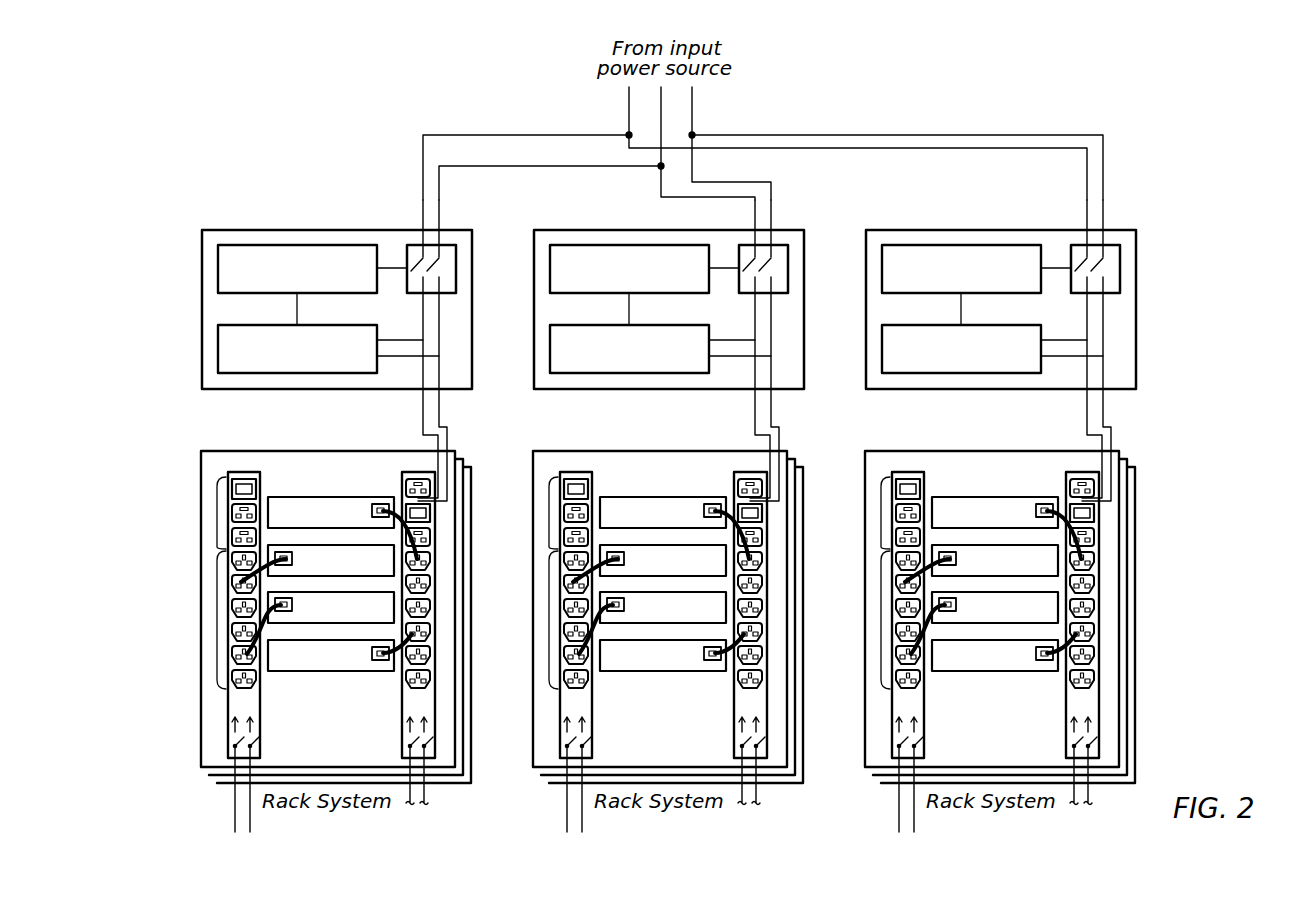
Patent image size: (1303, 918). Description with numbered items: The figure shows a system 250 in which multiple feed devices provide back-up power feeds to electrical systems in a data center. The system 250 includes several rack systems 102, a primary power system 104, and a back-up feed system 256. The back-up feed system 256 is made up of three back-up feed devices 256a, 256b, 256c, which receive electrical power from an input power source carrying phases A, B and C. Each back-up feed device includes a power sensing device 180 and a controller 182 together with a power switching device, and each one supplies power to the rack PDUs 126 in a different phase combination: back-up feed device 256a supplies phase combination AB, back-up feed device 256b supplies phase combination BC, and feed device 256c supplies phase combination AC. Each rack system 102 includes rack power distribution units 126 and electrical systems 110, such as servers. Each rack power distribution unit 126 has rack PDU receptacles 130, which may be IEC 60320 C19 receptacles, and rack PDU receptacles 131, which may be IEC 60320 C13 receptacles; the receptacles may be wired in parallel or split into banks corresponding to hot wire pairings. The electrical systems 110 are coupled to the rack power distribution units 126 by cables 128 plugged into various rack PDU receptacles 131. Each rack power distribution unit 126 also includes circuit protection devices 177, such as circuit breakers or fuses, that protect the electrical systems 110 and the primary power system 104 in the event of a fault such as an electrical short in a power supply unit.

The system 250 is at (1160, 128).
The back-up feed system 256 is at (229, 209).
The back-up feed device 256a is at (337, 350).
The back-up feed device 256b is at (664, 391).
The feed device 256c is at (996, 391).
The controller 182 is at (313, 277).
The power sensing device 180 is at (313, 357).
The rack system 102 is at (344, 760).
The electrical system 110 is at (309, 665).
The rack power distribution unit 126 is at (259, 690).
The cable 128 is at (383, 671).
The rack PDU receptacle 130 is at (217, 513).
The rack PDU receptacle 131 is at (217, 615).
The circuit protection device 177 is at (234, 740).
The primary power system 104 is at (234, 815).